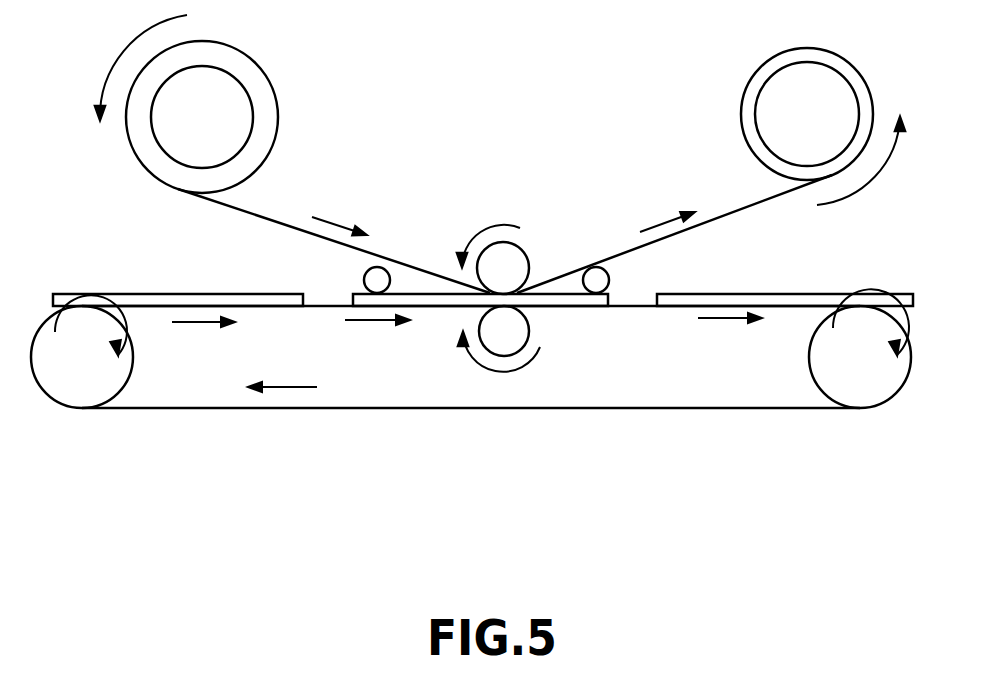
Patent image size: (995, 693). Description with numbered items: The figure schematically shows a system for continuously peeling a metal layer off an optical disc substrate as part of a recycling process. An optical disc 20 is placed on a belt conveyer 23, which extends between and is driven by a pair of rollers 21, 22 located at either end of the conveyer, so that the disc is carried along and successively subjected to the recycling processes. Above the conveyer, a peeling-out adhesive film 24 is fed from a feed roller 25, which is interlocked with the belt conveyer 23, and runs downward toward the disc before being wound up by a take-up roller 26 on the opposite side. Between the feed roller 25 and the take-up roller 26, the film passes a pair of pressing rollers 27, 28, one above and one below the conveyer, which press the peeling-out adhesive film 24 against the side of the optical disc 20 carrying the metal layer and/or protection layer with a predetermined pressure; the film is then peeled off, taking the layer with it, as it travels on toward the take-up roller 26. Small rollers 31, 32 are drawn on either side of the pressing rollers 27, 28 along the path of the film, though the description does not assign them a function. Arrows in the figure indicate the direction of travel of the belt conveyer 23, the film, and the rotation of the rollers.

The optical disc 20 is at (133, 292).
The roller 21 is at (82, 392).
The roller 22 is at (867, 390).
The belt conveyer 23 is at (425, 408).
The peeling-out adhesive film 24 is at (250, 213).
The feed roller 25 is at (232, 95).
The take-up roller 26 is at (773, 98).
The pressing roller 27 is at (517, 270).
The pressing roller 28 is at (508, 340).
The guide roller 31 is at (380, 278).
The guide roller 32 is at (598, 278).